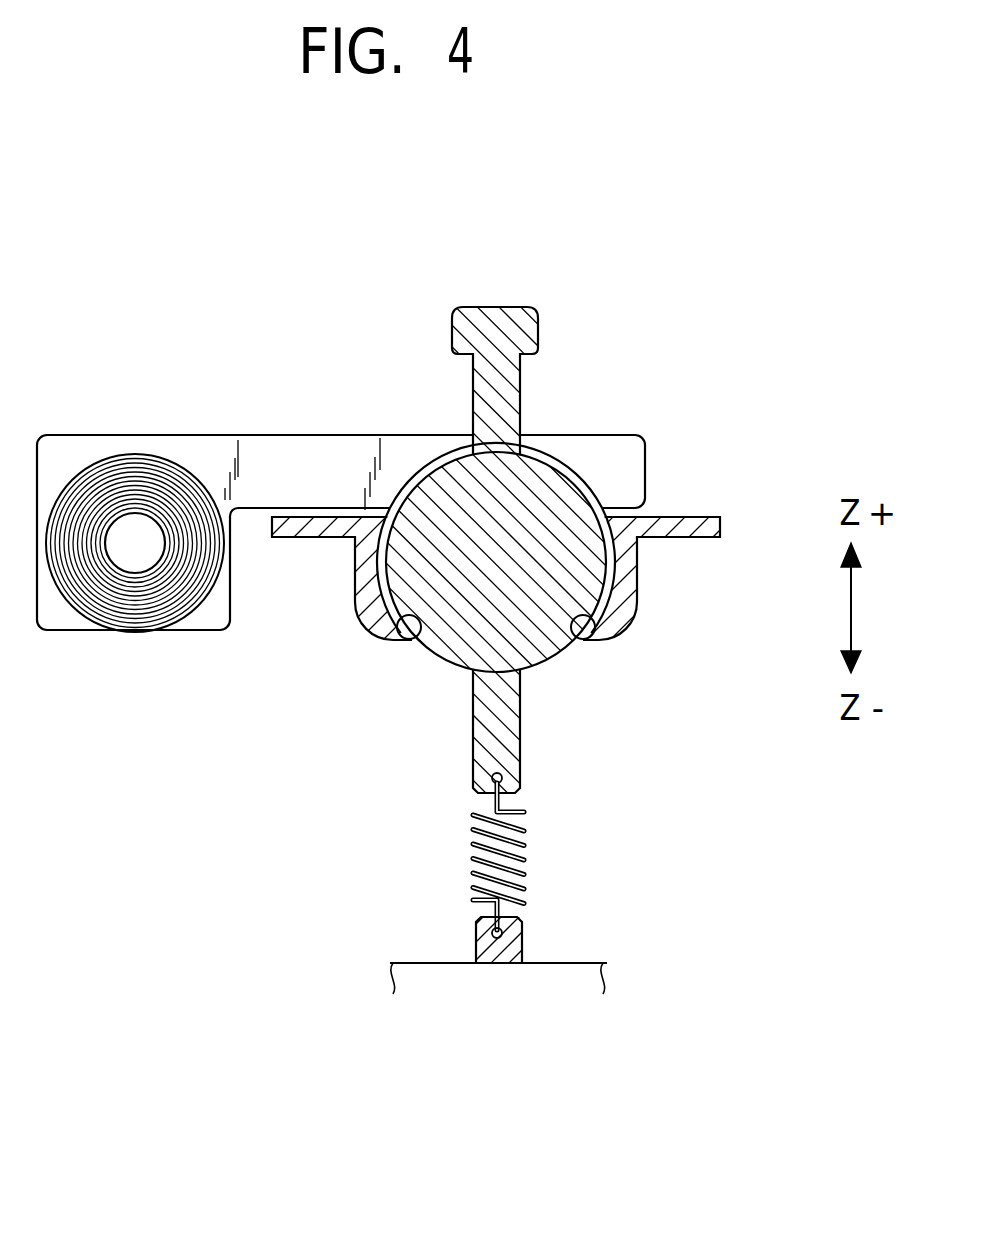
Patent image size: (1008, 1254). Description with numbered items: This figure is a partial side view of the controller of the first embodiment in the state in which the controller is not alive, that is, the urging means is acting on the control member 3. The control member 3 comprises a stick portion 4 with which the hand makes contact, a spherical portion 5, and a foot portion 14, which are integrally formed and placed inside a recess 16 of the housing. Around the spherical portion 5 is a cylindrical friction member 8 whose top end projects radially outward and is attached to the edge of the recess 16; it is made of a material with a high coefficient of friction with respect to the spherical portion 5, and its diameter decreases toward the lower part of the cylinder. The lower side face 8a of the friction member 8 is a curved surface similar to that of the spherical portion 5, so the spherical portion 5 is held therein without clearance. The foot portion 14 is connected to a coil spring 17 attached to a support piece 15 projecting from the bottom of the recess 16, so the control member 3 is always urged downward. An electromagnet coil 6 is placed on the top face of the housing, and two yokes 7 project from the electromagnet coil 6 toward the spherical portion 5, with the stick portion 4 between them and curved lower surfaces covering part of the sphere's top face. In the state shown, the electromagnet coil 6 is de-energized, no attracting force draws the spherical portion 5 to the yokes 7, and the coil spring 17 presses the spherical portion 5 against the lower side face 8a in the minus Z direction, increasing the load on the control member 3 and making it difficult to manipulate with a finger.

The control member 3 is at (575, 338).
The stick portion 4 is at (495, 325).
The spherical portion 5 is at (527, 470).
The electromagnet coil 6 is at (122, 470).
The yokes 7 is at (308, 448).
The friction member 8 is at (625, 572).
The lower side face 8a is at (410, 628).
The foot portion 14 is at (512, 732).
The support piece 15 is at (488, 965).
The recess 16 is at (556, 965).
The coil spring 17 is at (478, 842).